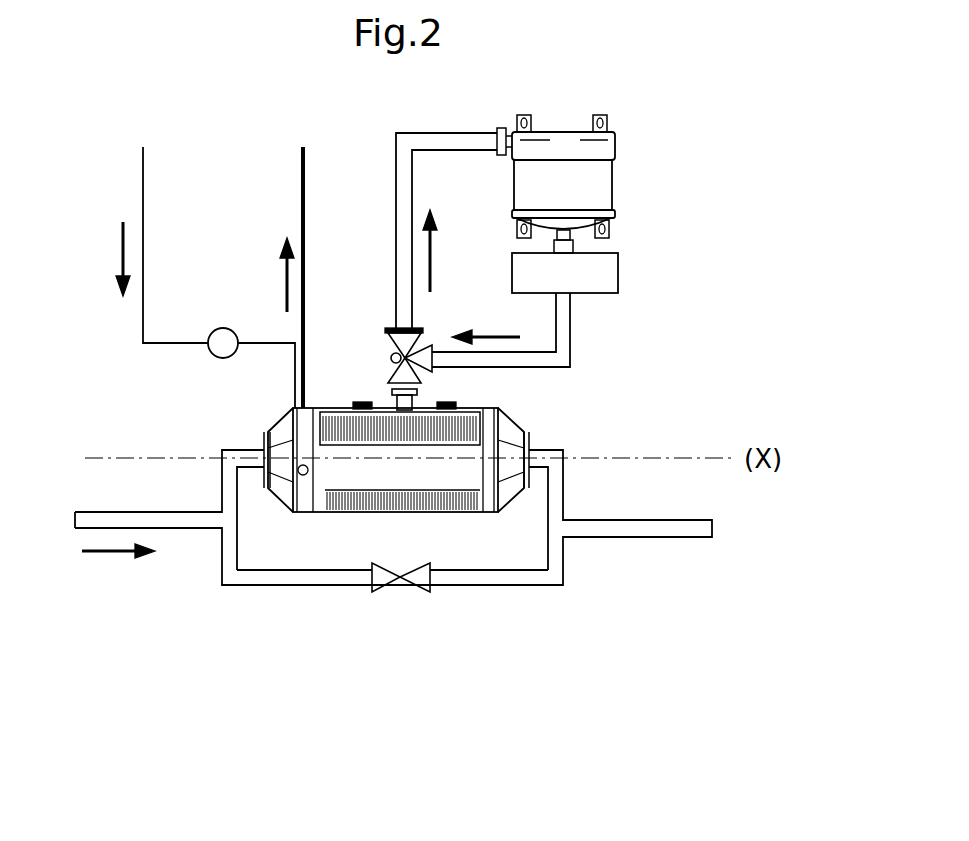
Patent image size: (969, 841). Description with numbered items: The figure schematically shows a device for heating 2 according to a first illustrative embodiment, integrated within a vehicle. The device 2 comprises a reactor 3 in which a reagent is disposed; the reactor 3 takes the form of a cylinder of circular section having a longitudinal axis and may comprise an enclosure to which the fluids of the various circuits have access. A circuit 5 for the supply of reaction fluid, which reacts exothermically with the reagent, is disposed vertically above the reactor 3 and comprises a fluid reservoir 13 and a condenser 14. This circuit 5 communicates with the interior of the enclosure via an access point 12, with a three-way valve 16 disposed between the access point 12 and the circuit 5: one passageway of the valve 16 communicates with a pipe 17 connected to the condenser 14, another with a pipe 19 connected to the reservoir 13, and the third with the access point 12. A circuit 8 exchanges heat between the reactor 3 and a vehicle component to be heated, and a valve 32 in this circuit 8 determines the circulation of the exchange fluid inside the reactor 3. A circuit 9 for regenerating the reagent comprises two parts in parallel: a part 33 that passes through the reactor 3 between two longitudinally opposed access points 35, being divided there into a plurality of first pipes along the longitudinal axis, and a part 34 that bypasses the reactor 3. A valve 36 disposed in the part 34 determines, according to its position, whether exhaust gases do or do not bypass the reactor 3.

The device for heating 2 is at (243, 138).
The circuit for the exchange of heat 8 is at (82, 126).
The valve 32 is at (212, 356).
The pipe 17 is at (398, 172).
The condenser 14 is at (600, 142).
The fluid reservoir 13 is at (606, 272).
The circuit for the supply of reaction fluid 5 is at (690, 93).
The pipe 19 is at (560, 320).
The three-way valve 16 is at (394, 352).
The access point 12 is at (396, 406).
The reactor 3 is at (500, 411).
The access points 35 is at (282, 474).
The part of the regeneration circuit 33 is at (250, 456).
The bypass part 34 is at (308, 580).
The valve 36 is at (418, 580).
The circuit for regenerating the reagent 9 is at (700, 612).